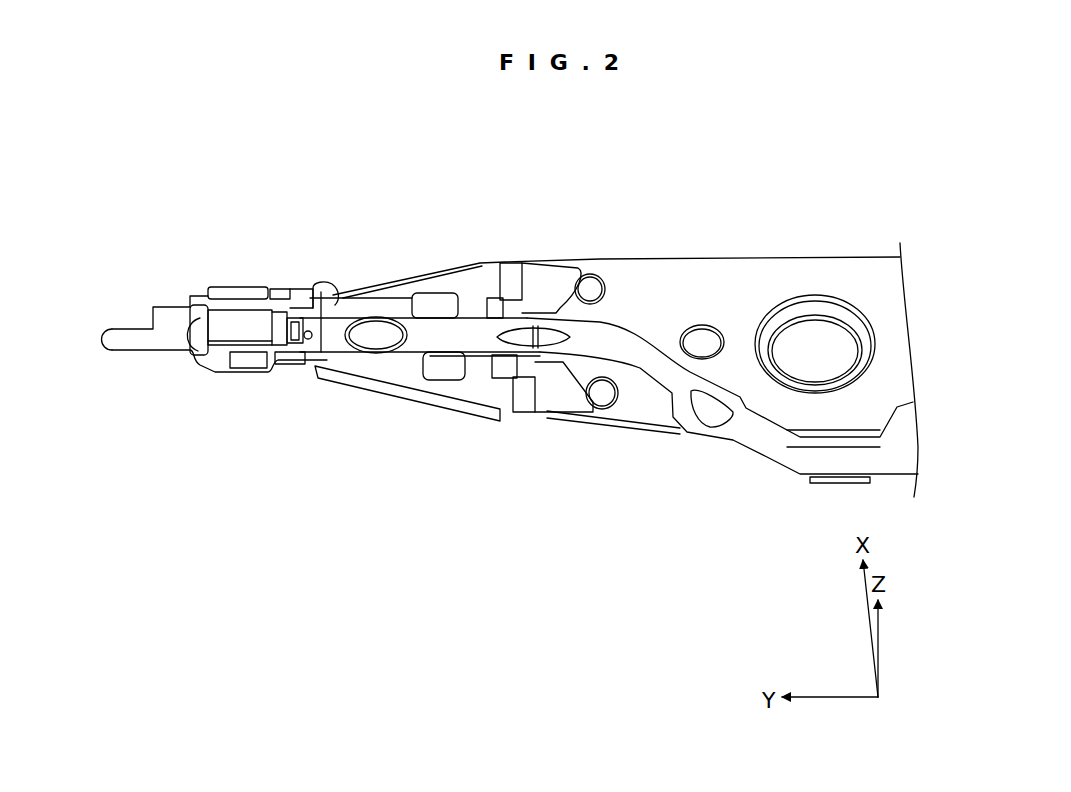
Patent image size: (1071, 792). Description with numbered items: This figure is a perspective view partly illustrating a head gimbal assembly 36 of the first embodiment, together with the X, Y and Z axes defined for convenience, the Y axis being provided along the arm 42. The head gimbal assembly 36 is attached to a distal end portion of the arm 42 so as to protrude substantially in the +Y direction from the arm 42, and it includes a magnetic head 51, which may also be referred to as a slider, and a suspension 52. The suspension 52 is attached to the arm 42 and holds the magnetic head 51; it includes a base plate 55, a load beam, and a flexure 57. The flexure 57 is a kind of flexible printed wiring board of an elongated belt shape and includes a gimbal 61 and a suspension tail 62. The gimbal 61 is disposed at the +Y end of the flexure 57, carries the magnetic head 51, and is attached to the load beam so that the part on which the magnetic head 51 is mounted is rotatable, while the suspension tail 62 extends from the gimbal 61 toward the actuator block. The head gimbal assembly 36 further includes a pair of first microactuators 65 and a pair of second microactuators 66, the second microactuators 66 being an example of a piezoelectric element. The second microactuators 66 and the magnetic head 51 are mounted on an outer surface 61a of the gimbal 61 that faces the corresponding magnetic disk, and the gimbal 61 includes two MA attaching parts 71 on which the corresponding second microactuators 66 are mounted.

The head gimbal assembly 36 is at (824, 178).
The arm 42 is at (880, 272).
The magnetic head 51 is at (192, 326).
The suspension 52 is at (701, 250).
The base plate 55 is at (850, 272).
The flexure 57 is at (380, 270).
The gimbal 61 is at (300, 288).
The outer surface 61a is at (315, 290).
The suspension tail 62 is at (786, 458).
The first microactuator 65 is at (560, 267).
The second microactuator 66 is at (447, 270).
The MA attaching part 71 is at (235, 288).